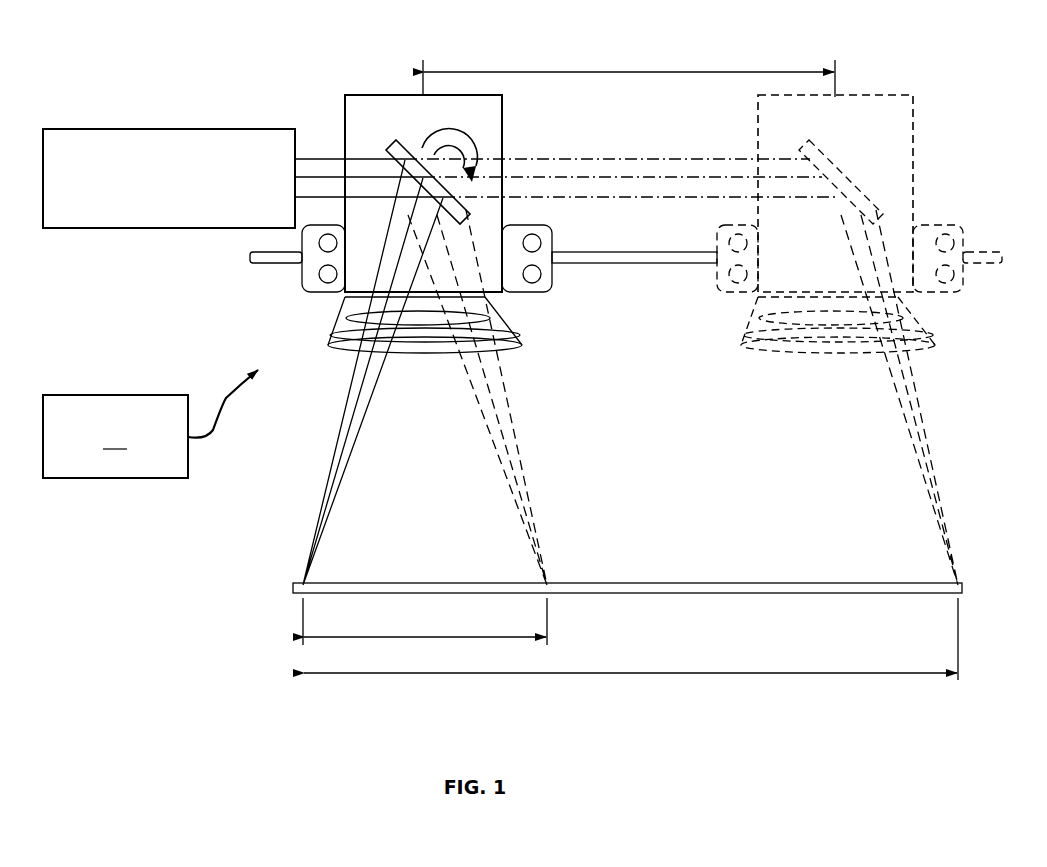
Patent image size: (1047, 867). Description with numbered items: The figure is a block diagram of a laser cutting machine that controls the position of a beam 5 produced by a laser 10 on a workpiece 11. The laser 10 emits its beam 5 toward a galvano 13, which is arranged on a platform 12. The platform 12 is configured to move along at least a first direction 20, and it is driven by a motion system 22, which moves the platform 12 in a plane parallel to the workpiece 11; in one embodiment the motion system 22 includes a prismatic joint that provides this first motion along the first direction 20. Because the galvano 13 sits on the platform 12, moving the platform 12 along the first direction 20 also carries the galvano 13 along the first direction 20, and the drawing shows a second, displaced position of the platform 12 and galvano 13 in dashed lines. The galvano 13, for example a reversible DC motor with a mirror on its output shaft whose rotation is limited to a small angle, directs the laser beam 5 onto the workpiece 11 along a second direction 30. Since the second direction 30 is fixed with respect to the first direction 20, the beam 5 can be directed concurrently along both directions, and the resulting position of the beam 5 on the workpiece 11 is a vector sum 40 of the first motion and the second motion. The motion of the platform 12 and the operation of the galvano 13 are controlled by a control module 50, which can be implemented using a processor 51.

The laser 10 is at (157, 131).
The laser beam 5 is at (502, 428).
The galvano 13 is at (358, 99).
The first direction 20 is at (662, 74).
The platform 12 is at (304, 283).
The motion system 22 is at (634, 263).
The workpiece 11 is at (707, 590).
The second direction 30 is at (406, 637).
The vector sum 40 is at (662, 673).
The control module 50 is at (150, 401).
The processor 51 is at (114, 438).